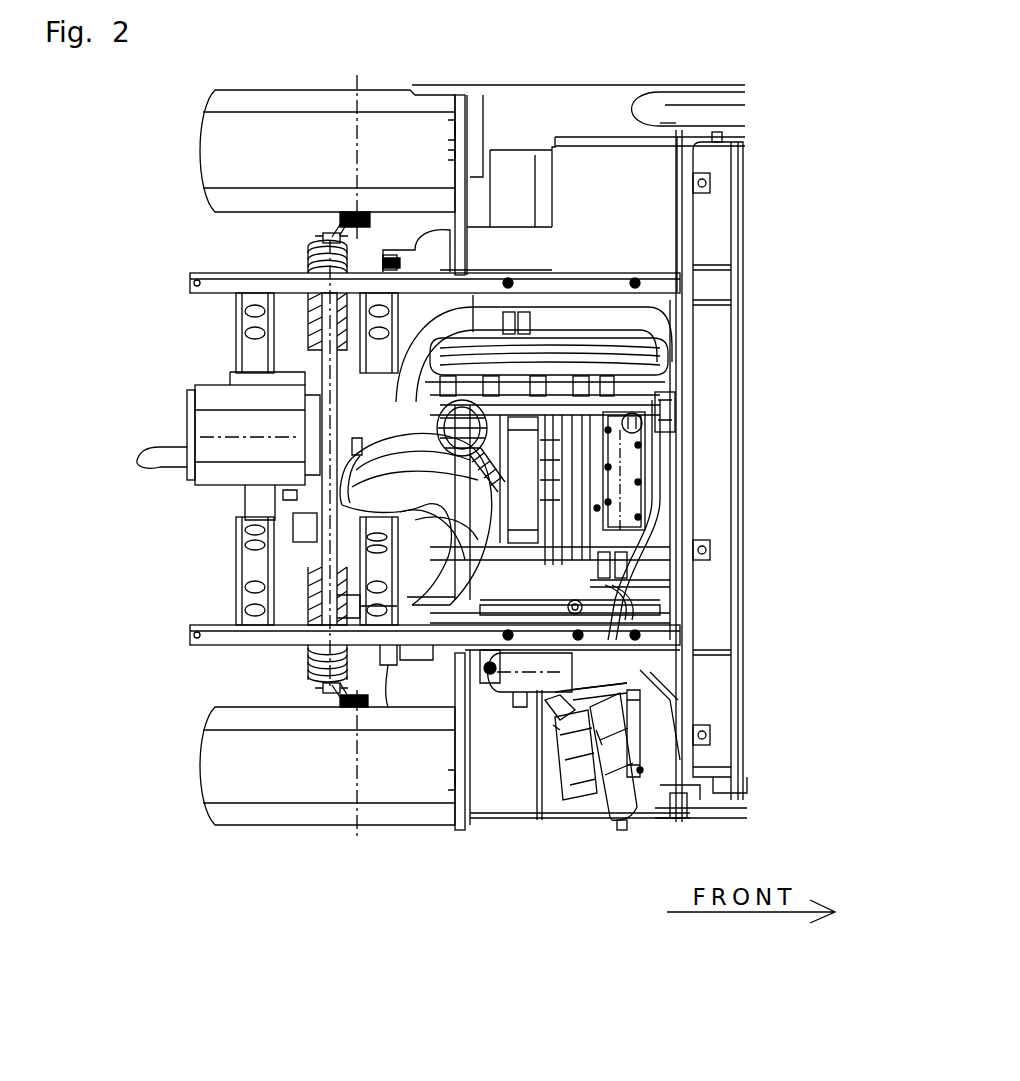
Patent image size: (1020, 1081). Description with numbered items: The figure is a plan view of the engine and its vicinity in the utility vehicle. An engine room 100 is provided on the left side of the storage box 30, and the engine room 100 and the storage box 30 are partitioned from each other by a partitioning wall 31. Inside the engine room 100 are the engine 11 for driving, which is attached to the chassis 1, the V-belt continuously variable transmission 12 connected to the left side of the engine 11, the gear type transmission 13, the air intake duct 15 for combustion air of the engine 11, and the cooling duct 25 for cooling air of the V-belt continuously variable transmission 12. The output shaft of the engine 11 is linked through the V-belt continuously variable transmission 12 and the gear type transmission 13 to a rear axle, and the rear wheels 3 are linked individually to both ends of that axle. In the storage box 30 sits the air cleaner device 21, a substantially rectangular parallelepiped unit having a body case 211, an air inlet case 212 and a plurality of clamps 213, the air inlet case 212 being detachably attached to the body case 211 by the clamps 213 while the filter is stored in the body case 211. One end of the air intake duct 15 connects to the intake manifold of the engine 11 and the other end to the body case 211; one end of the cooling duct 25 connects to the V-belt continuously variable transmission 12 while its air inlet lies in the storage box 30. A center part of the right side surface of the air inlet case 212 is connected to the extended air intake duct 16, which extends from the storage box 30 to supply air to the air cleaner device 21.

The chassis 1 is at (152, 276).
The rear wheels 3 is at (222, 815).
The engine 11 is at (622, 475).
The V-belt continuously variable transmission 12 is at (547, 340).
The gear type transmission 13 is at (363, 330).
The air intake duct 15 is at (600, 600).
The extended air intake duct 16 is at (580, 745).
The air cleaner device 21 is at (418, 848).
The cooling duct 25 is at (497, 552).
The storage box 30 is at (625, 742).
The partitioning wall 31 is at (600, 650).
The engine room 100 is at (665, 415).
The body case 211 is at (550, 705).
The air inlet case 212 is at (558, 810).
The clamps 213 is at (542, 720).